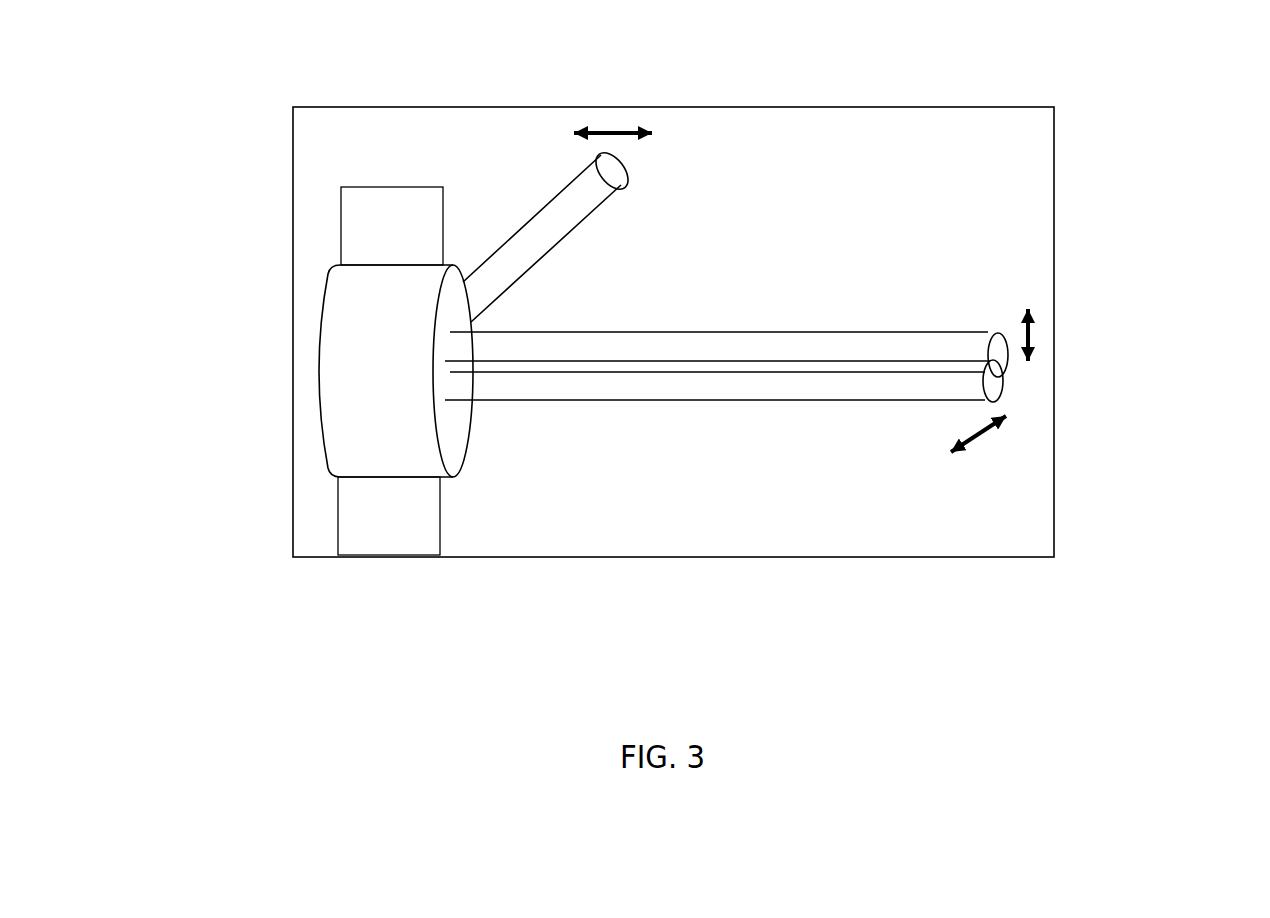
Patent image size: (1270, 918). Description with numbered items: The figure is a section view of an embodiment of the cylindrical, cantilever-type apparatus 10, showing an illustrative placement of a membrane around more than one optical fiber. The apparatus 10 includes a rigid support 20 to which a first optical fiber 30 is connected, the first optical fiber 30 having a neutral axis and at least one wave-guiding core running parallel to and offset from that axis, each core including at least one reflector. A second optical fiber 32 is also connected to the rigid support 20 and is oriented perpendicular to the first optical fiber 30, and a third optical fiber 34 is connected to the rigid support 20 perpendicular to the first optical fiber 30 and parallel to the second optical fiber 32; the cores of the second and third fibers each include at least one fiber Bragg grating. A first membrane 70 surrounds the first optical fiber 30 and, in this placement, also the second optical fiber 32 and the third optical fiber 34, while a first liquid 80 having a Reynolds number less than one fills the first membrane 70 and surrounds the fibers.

The cylindrical, cantilever-type apparatus 10 is at (479, 594).
The rigid support 20 is at (375, 383).
The first optical fiber 30 is at (588, 197).
The second optical fiber 32 is at (702, 347).
The third optical fiber 34 is at (600, 385).
The first membrane 70 is at (1054, 460).
The first liquid 80 is at (789, 472).